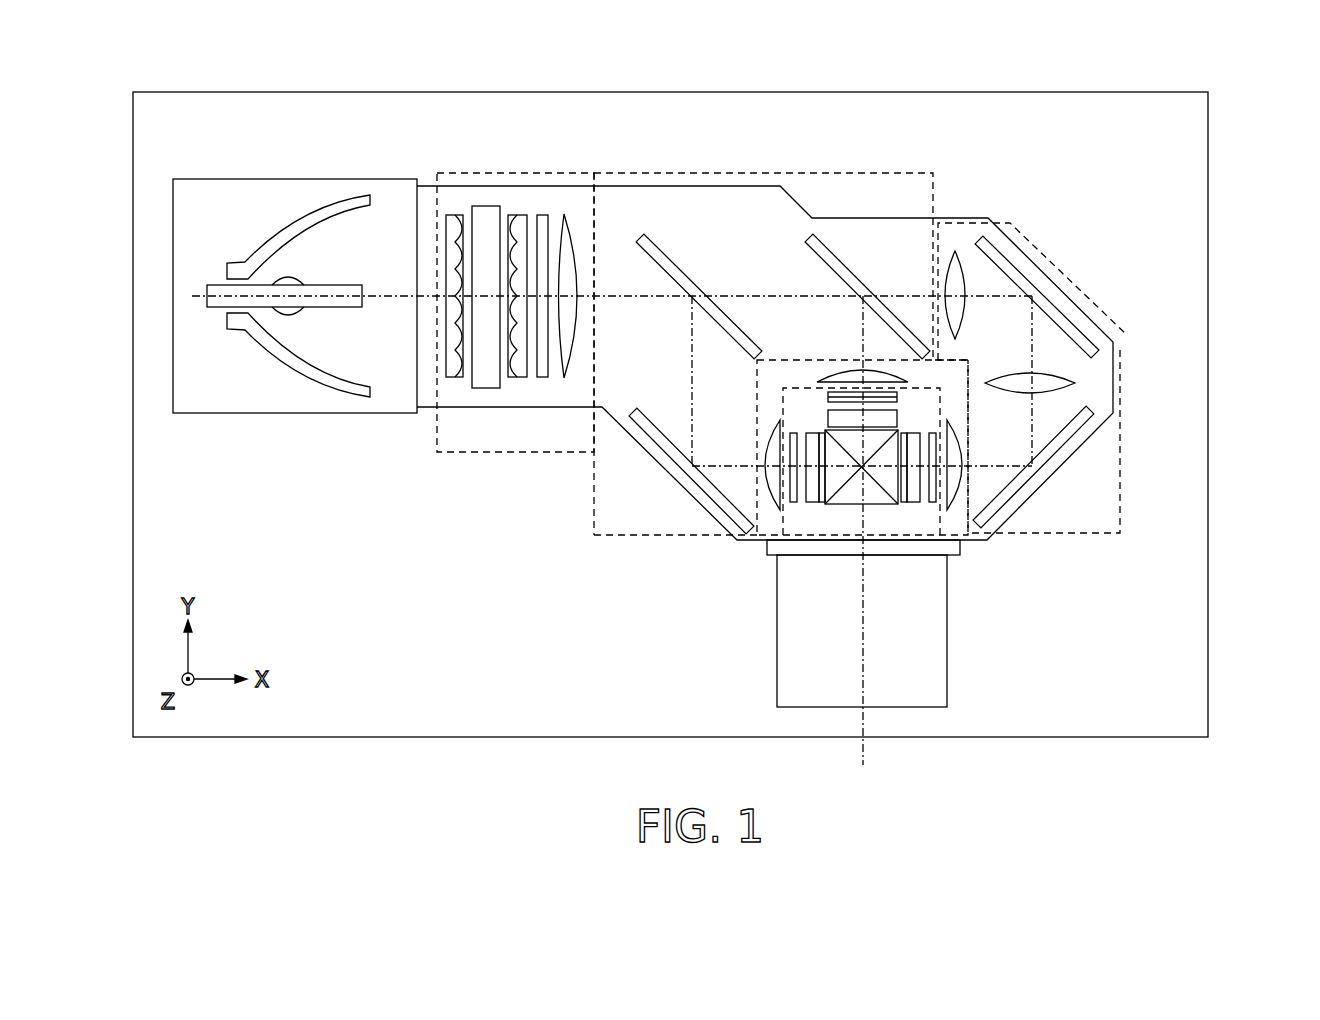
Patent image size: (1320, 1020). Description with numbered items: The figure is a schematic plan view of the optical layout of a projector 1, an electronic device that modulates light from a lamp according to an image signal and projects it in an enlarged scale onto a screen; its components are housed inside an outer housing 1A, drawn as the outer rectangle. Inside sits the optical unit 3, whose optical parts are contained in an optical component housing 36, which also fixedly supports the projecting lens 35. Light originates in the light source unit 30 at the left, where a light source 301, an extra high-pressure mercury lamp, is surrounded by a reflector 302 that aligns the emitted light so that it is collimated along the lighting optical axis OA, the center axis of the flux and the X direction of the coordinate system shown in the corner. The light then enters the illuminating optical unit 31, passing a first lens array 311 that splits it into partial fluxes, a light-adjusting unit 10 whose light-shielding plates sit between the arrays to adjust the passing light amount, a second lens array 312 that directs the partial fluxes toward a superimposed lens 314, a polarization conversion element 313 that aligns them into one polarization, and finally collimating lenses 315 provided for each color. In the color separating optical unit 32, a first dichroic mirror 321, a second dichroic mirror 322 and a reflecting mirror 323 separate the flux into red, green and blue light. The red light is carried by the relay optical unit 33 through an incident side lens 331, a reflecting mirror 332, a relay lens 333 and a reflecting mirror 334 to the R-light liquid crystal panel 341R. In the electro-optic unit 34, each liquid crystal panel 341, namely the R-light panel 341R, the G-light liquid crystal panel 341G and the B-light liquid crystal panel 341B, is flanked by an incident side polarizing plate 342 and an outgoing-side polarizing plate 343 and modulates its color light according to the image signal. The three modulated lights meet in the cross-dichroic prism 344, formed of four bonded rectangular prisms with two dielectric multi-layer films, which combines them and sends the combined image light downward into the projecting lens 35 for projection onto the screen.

The projector 1 is at (1054, 65).
The outer housing 1A is at (1209, 493).
The optical unit 3 is at (1044, 193).
The light-adjusting unit 10 is at (485, 206).
The light source unit 30 is at (266, 179).
The light source 301 is at (314, 312).
The reflector 302 is at (267, 350).
The illuminating optical unit 31 is at (510, 173).
The first lens array 311 is at (455, 378).
The second lens array 312 is at (520, 378).
The polarization conversion element 313 is at (543, 380).
The superimposed lens 314 is at (568, 378).
The collimating lenses 315 is at (770, 455).
The color separating optical unit 32 is at (732, 173).
The first dichroic mirror 321 is at (672, 265).
The second dichroic mirror 322 is at (843, 268).
The reflecting mirror 323 is at (660, 440).
The relay optical unit 33 is at (1120, 378).
The incident side lens 331 is at (957, 255).
The reflecting mirror 332 is at (1090, 332).
The relay lens 333 is at (1020, 380).
The reflecting mirror 334 is at (1052, 450).
The electro-optic unit 34 is at (792, 378).
The liquid crystal panel 341 is at (863, 455).
The G-light liquid crystal panel 341G is at (845, 393).
The B-light liquid crystal panel 341B is at (812, 503).
The R-light liquid crystal panel 341R is at (913, 503).
The incident side polarizing plate 342 is at (823, 398).
The outgoing-side polarizing plate 343 is at (823, 420).
The cross-dichroic prism 344 is at (873, 493).
The projecting lens 35 is at (940, 668).
The optical component housing 36 is at (636, 450).
The lighting optical axis OA is at (640, 298).